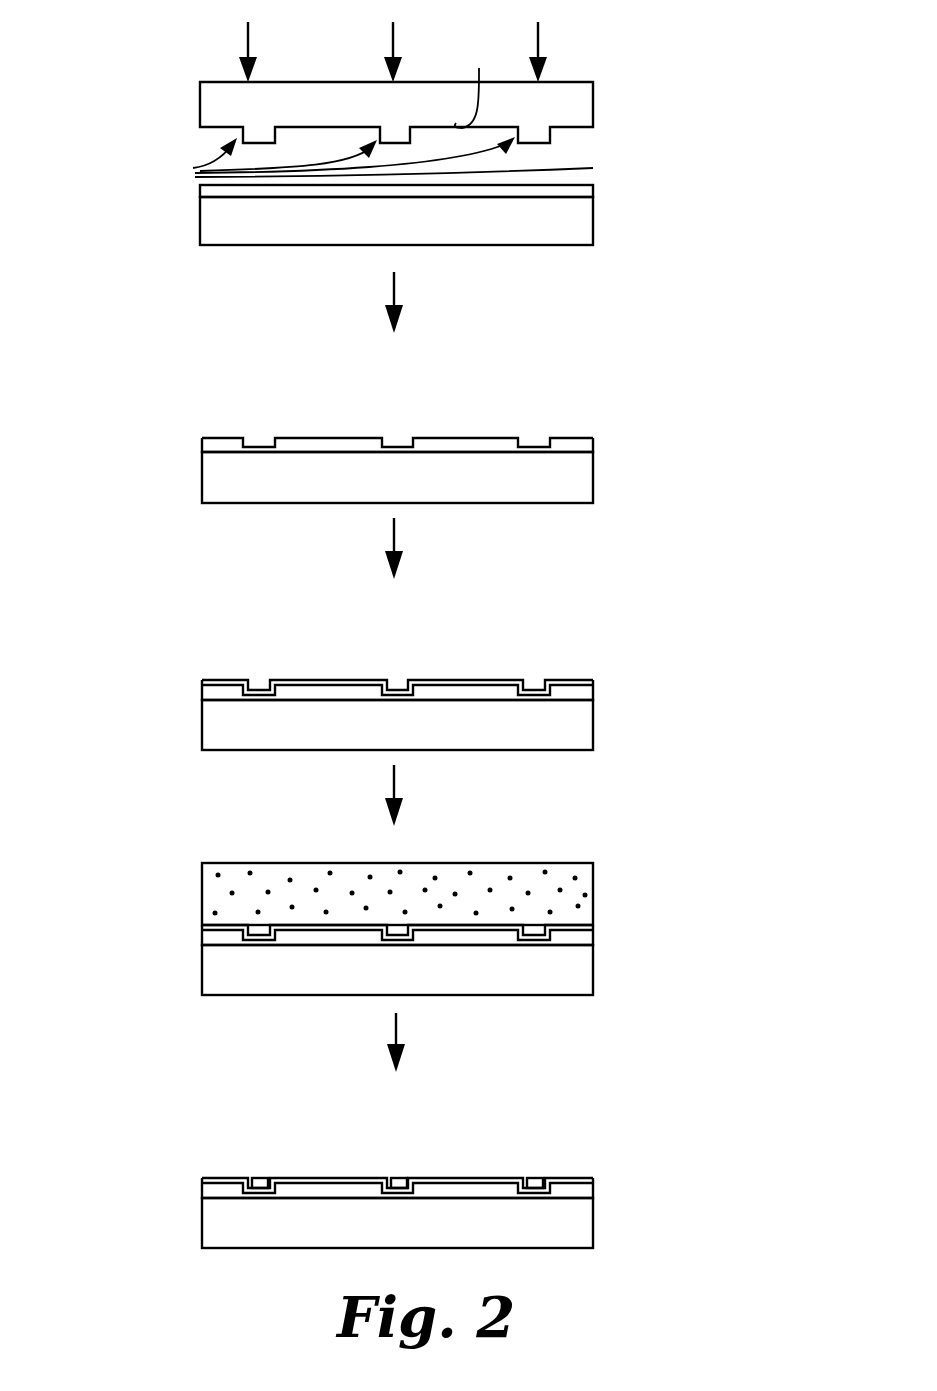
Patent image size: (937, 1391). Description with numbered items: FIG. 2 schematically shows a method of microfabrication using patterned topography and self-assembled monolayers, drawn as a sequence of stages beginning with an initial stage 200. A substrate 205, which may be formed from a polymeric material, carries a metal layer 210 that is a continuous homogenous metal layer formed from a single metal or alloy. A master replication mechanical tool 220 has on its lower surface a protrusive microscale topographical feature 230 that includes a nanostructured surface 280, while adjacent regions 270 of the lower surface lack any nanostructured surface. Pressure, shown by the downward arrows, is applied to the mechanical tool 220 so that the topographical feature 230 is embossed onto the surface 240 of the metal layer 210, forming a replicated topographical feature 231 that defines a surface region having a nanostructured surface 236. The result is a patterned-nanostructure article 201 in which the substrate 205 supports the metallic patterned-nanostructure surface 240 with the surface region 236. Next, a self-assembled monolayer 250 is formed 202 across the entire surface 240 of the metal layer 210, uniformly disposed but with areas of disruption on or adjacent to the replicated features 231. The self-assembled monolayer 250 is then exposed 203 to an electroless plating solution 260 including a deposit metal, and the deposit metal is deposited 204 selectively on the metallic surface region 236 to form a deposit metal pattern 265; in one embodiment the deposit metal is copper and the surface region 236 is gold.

The imprint lithography process step (template positioning) 200 is at (120, 132).
The patterned-nanostructure article 201 is at (125, 458).
The forming step 202 is at (125, 705).
The exposing step 203 is at (125, 942).
The depositing step 204 is at (125, 1206).
The substrate 205 is at (593, 222).
The metal layer 210 is at (593, 192).
The master replication mechanical tool 220 is at (583, 103).
The protrusive microscale topographical feature 230 is at (186, 160).
The replicated topographical feature 231 is at (246, 428).
The nanostructured surface region 236 is at (395, 443).
The surface of the metal layer 240 is at (578, 183).
The self-assembled monolayer 250 is at (230, 685).
The electroless plating solution 260 is at (593, 897).
The deposit metal pattern 265 is at (397, 1178).
The regions lacking nanostructured surface 270 is at (476, 85).
The nanostructured surface 280 is at (552, 155).